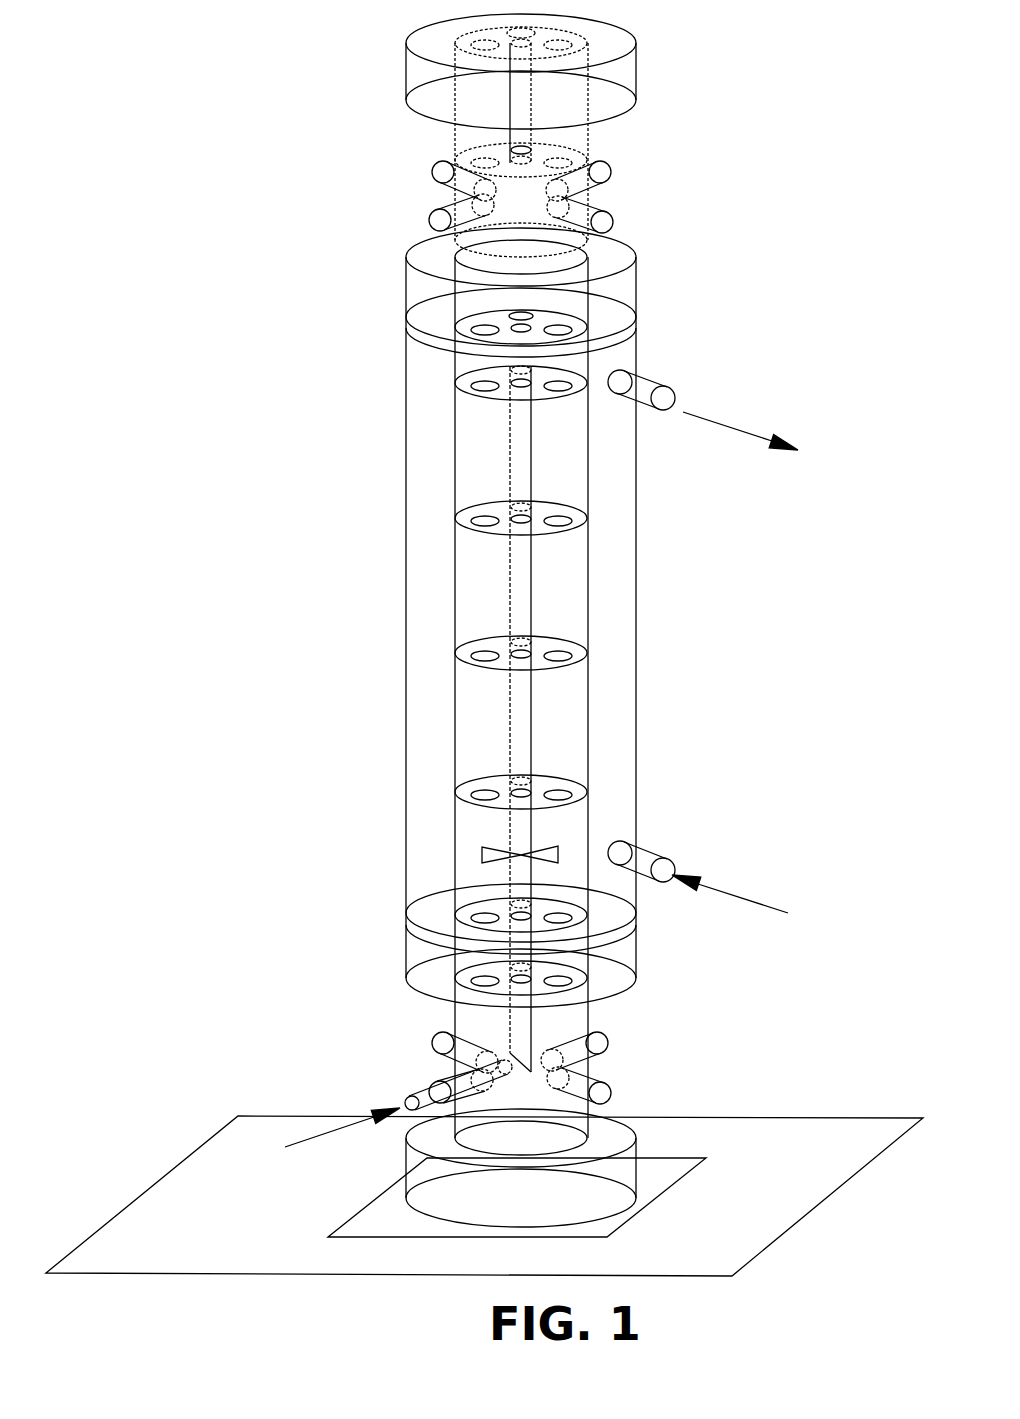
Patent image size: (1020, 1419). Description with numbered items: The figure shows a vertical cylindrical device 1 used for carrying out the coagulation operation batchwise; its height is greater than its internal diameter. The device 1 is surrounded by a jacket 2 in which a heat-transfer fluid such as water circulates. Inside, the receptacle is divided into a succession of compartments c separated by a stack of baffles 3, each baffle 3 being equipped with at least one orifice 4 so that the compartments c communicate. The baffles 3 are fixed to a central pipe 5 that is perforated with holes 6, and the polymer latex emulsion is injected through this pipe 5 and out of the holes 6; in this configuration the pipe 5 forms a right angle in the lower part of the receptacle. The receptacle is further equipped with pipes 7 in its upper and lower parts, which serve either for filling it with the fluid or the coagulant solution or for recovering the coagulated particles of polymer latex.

The vertical cylindrical device 1 is at (405, 678).
The jacket 2 is at (420, 768).
The baffles 3 is at (460, 400).
The orifice 4 is at (485, 518).
The central pipe 5 is at (530, 595).
The holes 6 is at (521, 855).
The pipes 7 is at (613, 218).
The compartments c is at (480, 587).